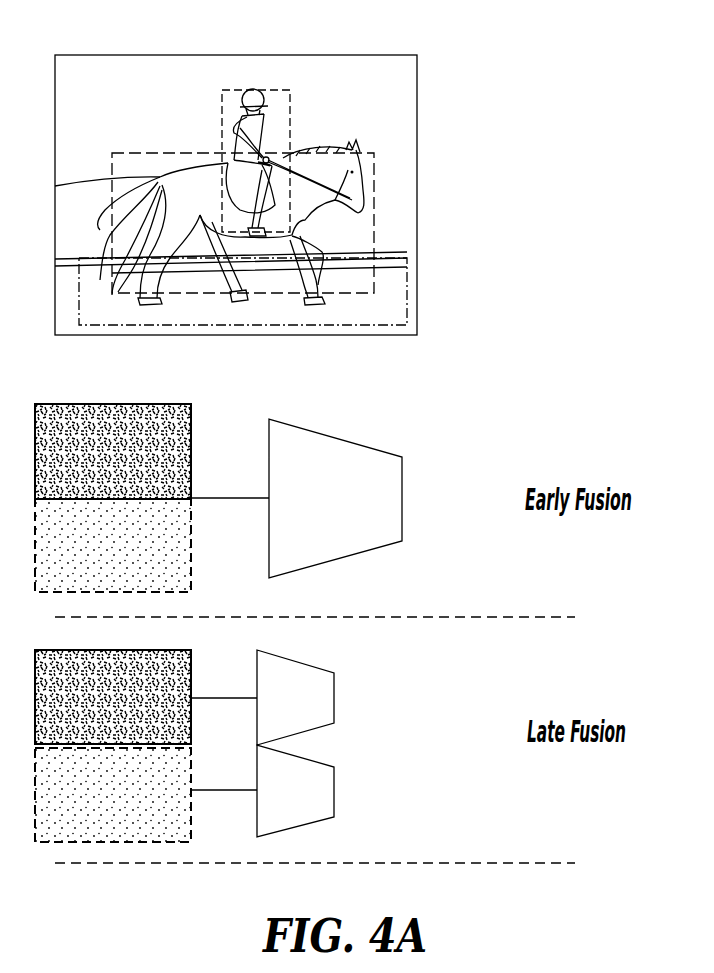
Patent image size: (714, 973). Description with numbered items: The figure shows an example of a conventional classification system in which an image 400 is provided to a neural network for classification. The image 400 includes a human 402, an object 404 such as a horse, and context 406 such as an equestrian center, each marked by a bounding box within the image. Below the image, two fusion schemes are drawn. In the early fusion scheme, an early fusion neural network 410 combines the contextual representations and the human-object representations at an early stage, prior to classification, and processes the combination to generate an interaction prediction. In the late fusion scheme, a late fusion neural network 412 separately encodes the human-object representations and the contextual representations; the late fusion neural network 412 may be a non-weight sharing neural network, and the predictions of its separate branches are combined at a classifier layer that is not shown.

The image 400 is at (410, 98).
The human 402 is at (283, 88).
The object 404 is at (185, 168).
The context 406 is at (408, 277).
The early fusion neural network 410 is at (313, 508).
The late fusion neural network 412 is at (273, 709).